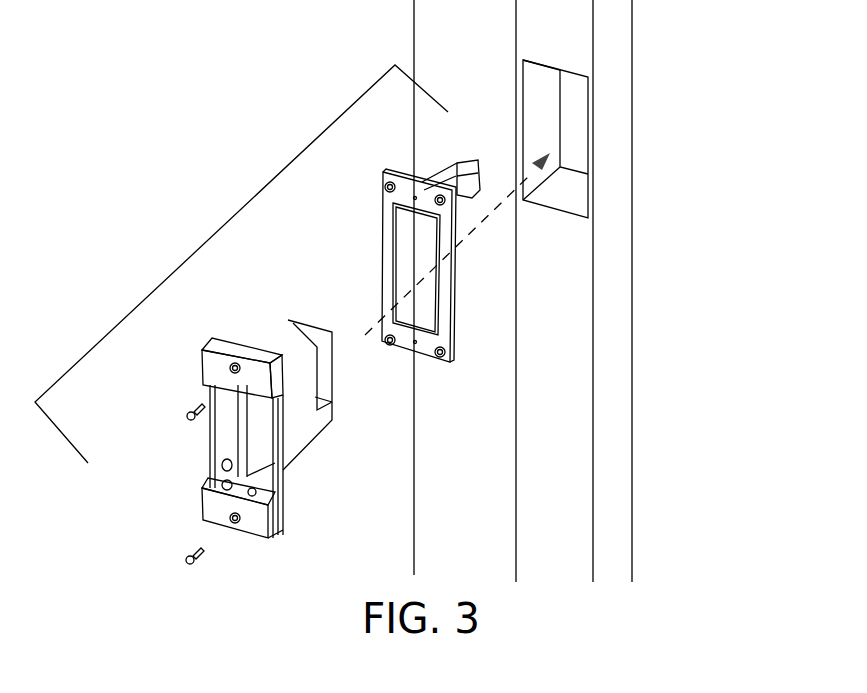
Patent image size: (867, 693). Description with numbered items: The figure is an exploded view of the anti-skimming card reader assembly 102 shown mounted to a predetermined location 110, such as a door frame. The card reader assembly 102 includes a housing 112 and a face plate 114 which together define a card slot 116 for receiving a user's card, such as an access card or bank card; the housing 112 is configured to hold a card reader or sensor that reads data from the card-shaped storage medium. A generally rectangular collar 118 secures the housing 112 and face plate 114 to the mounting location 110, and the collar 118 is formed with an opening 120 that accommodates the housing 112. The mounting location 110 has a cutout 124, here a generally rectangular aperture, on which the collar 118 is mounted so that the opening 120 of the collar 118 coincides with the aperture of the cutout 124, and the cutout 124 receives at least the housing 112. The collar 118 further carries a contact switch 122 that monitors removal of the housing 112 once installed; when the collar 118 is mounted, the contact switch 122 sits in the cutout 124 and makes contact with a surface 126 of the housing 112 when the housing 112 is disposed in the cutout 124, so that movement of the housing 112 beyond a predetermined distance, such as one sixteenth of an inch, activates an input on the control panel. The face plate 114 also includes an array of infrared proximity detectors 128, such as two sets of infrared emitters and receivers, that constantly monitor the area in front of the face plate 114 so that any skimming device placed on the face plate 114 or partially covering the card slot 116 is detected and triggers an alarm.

The card reader assembly 102 is at (238, 208).
The predetermined location 110 is at (562, 275).
The housing 112 is at (258, 428).
The face plate 114 is at (228, 343).
The card slot 116 is at (282, 472).
The collar 118 is at (452, 337).
The opening 120 is at (426, 251).
The contact switch 122 is at (421, 154).
The cutout 124 is at (525, 139).
The surface 126 is at (283, 352).
The infrared proximity detectors 128 is at (225, 483).